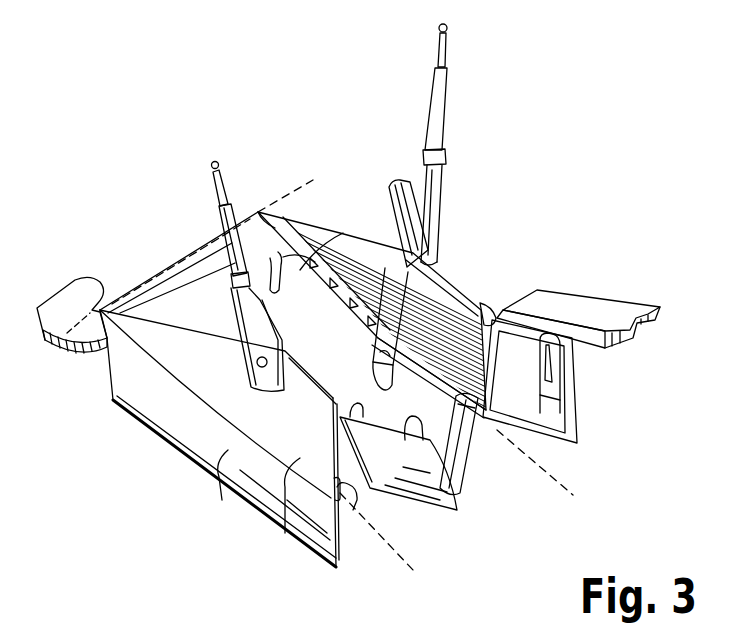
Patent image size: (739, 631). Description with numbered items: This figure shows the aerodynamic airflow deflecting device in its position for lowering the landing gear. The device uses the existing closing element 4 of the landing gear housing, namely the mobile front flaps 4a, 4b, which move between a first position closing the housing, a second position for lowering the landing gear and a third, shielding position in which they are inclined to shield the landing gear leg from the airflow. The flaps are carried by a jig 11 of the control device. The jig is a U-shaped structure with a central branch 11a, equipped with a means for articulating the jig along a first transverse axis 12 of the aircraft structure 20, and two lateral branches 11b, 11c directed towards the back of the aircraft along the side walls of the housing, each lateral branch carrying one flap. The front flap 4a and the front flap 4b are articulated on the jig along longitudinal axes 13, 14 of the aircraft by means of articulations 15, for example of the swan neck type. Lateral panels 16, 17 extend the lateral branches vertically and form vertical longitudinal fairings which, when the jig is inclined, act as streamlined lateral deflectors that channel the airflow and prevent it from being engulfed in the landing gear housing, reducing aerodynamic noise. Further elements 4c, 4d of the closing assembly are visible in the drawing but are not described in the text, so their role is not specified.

The closing element 4 is at (96, 433).
The front flap 4a is at (222, 482).
The front flap 4b is at (440, 440).
The rear frame of housing 4c is at (570, 410).
The bottom plate of housing 4d is at (423, 500).
The jig 11 is at (262, 210).
The central branch 11a is at (163, 268).
The lateral branch 11b is at (340, 237).
The lateral branch 11c is at (353, 495).
The first transverse axis 12 is at (297, 188).
The longitudinal axis 13 is at (400, 557).
The longitudinal axis 14 is at (553, 480).
The articulation 15 is at (437, 287).
The lateral panel 16 is at (482, 297).
The lateral panel 17 is at (281, 530).
The aircraft structure 20 is at (58, 305).